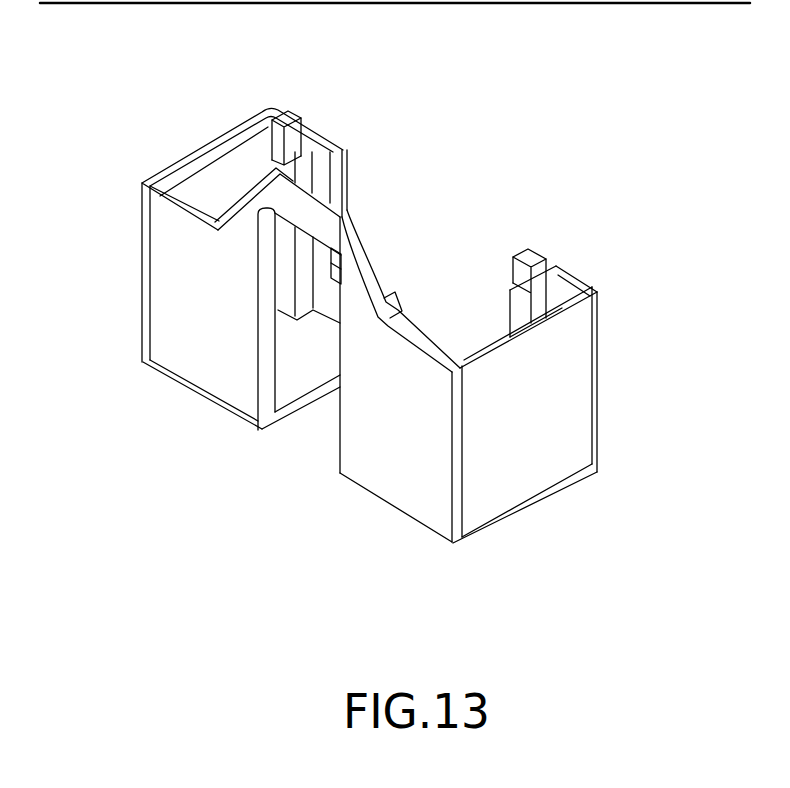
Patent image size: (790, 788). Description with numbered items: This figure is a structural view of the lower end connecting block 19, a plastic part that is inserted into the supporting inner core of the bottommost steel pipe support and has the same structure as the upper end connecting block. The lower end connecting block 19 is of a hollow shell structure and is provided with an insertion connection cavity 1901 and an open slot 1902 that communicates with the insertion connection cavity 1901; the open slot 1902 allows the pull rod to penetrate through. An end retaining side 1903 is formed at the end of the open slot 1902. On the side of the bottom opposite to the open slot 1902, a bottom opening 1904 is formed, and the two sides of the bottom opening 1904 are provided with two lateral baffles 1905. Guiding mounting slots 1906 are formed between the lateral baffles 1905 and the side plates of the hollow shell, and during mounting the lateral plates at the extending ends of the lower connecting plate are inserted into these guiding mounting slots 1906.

The lower end connecting block 19 is at (202, 362).
The insertion connection cavity 1901 is at (460, 350).
The open slot 1902 is at (325, 433).
The end retaining side 1903 is at (303, 197).
The bottom opening 1904 is at (418, 238).
The lateral baffles 1905 is at (282, 160).
The guiding mounting slots 1906 is at (306, 142).